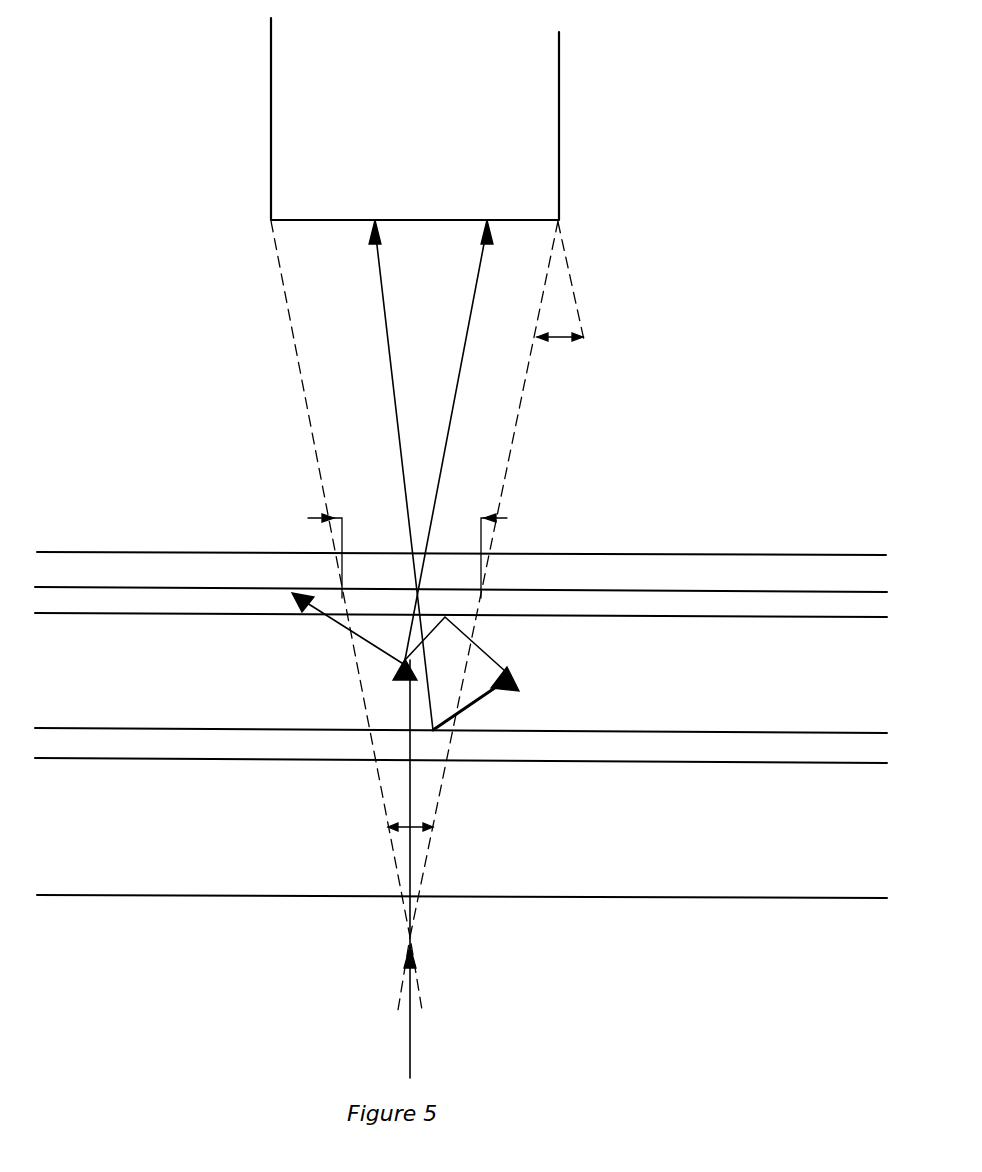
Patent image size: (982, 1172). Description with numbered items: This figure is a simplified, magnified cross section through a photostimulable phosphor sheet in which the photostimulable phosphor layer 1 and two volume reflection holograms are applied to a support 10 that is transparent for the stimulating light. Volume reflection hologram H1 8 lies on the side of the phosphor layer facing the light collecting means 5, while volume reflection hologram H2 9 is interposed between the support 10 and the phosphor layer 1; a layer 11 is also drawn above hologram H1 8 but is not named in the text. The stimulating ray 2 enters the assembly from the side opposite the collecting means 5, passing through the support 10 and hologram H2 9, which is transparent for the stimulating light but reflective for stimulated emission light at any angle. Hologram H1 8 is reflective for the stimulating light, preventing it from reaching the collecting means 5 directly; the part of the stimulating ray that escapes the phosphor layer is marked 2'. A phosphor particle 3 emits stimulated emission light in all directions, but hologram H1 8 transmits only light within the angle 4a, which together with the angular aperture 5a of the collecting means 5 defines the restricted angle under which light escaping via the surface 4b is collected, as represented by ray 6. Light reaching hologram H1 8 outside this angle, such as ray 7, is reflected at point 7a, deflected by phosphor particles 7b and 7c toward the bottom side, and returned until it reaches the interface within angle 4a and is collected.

The photostimulable phosphor layer 1 is at (862, 666).
The stimulating ray 2 is at (433, 869).
The escaping part of stimulating ray 2' is at (341, 629).
The phosphor particle 3 is at (393, 678).
The angle (opening angle) 4a is at (398, 824).
The surface of the photostimulable phosphor layer 4b is at (509, 514).
The light collecting means 5 is at (537, 34).
The angular aperture 5a is at (560, 330).
The collected stimulated emission light ray 6 is at (462, 377).
The reflected stimulated emission light ray 7 is at (400, 455).
The reflection point 7a is at (467, 618).
The phosphor particle 7b is at (518, 679).
The phosphor particle 7c is at (455, 733).
The volume reflection hologram H1 8 is at (872, 601).
The volume reflection hologram H2 9 is at (872, 746).
The support 10 is at (868, 826).
The top layer 11 is at (868, 572).